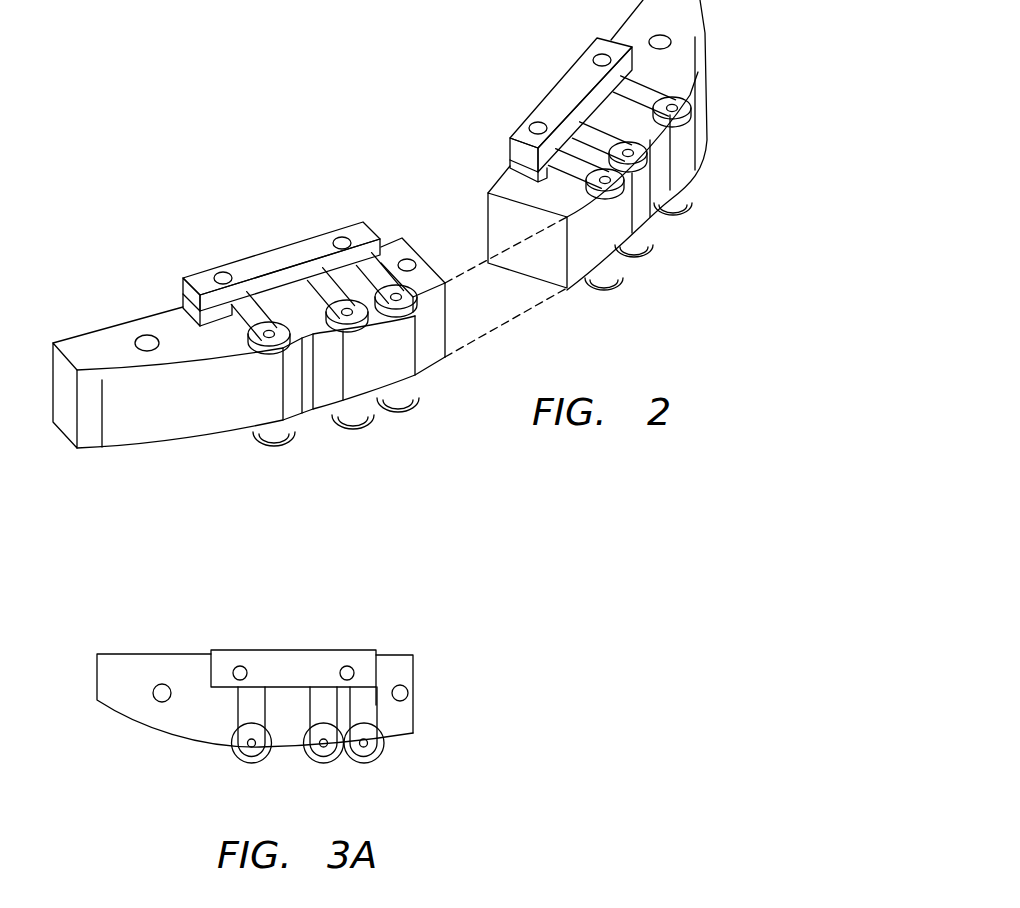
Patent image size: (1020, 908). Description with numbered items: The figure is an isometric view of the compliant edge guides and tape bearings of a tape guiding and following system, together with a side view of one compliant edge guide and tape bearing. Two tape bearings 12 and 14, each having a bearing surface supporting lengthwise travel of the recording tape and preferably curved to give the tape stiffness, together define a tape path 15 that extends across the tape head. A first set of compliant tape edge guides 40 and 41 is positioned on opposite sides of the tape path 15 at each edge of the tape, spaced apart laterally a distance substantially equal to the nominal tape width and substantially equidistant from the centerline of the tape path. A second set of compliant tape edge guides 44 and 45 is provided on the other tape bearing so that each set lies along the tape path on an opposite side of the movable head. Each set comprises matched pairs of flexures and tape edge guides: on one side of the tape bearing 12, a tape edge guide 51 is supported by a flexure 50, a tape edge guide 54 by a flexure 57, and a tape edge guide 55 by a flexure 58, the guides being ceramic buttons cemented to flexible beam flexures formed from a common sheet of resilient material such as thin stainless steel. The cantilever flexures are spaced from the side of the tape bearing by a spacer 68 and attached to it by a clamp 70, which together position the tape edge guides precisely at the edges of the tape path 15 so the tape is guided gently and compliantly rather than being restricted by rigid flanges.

In FIG. 2, the tape bearing 12 is at (183, 441).
In FIG. 2, the tape bearing 14 is at (625, 217).
In FIG. 2, the tape path 15 is at (468, 263).
In FIG. 2, the compliant tape edge guide 40 is at (253, 264).
In FIG. 2, the compliant tape edge guide 41 is at (400, 416).
In FIG. 2, the compliant tape edge guide 44 is at (550, 92).
In FIG. 2, the compliant tape edge guide 45 is at (623, 278).
In FIG. 2, the flexure 50 is at (382, 272).
In FIG. 3A, the flexure 50 is at (372, 713).
In FIG. 2, the tape edge guide 51 is at (402, 320).
In FIG. 3A, the tape edge guide 51 is at (380, 757).
In FIG. 3A, the tape edge guide 54 is at (323, 763).
In FIG. 3A, the tape edge guide 55 is at (236, 752).
In FIG. 3A, the flexure 57 is at (300, 700).
In FIG. 3A, the flexure 58 is at (238, 705).
In FIG. 2, the spacer 68 is at (183, 300).
In FIG. 2, the clamp 70 is at (268, 248).
In FIG. 3A, the clamp 70 is at (383, 665).